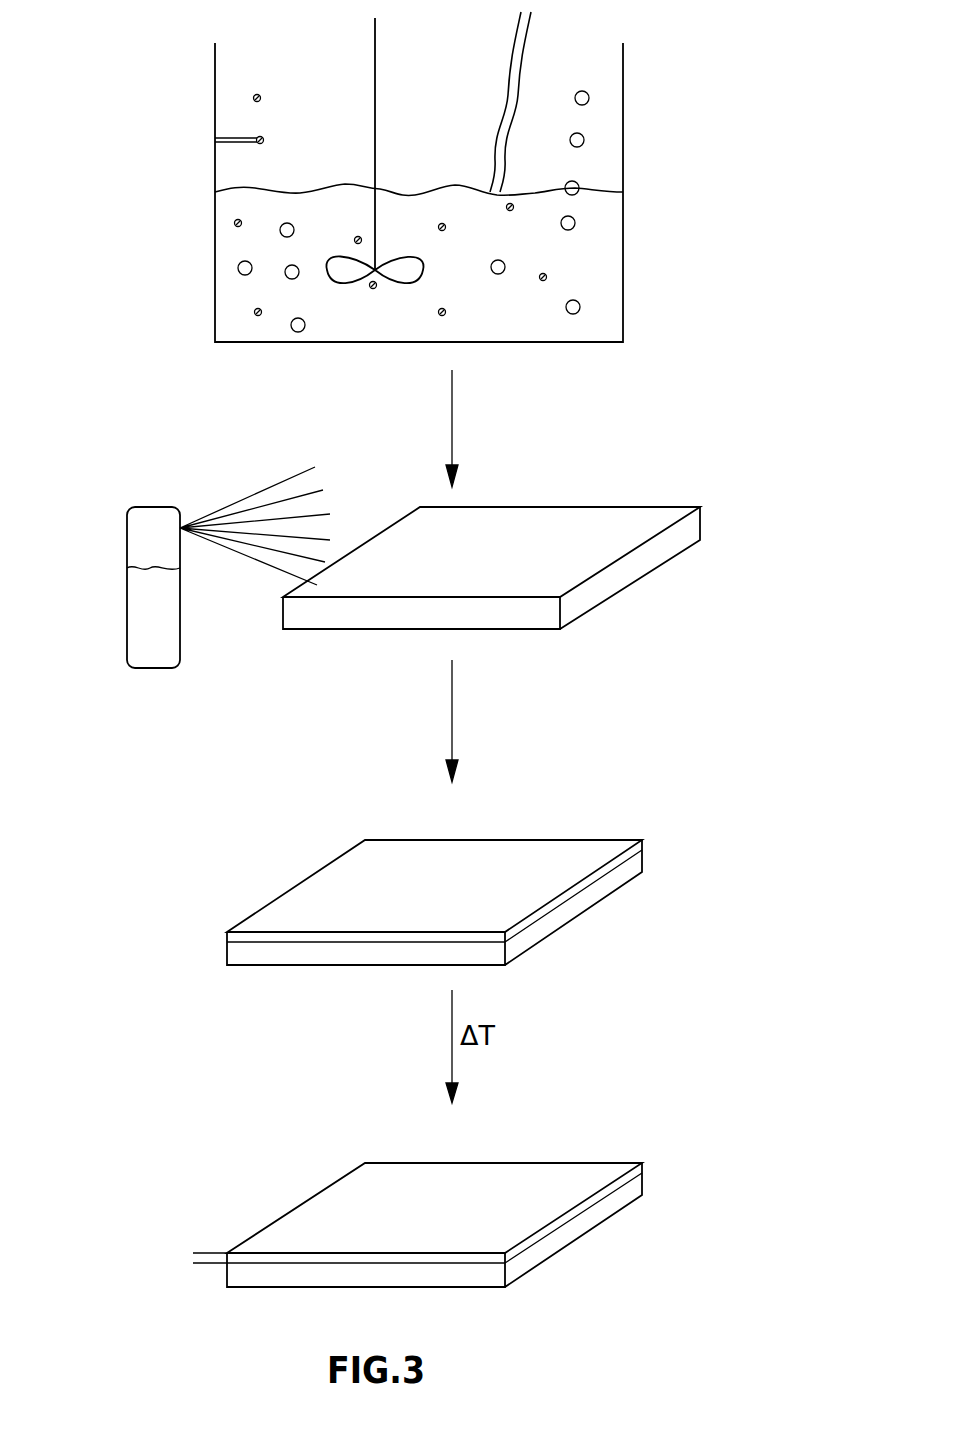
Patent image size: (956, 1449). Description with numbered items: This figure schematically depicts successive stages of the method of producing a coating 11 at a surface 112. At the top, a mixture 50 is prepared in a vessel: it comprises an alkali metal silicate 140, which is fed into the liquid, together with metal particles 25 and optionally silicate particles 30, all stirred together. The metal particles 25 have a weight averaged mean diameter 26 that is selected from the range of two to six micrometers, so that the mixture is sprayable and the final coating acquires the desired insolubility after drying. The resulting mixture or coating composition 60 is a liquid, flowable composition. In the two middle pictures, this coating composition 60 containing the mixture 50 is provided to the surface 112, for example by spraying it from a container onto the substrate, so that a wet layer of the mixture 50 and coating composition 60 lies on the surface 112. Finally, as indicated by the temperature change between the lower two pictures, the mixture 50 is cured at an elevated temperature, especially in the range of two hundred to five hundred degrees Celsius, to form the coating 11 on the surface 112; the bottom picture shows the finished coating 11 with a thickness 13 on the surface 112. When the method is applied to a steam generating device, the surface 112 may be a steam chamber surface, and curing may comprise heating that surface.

The coating 11 is at (395, 1183).
The coating thickness 13 is at (201, 1232).
The metal particles 25 is at (253, 98).
The weight averaged mean diameter 26 is at (208, 120).
The silicate particles 30 is at (590, 98).
The mixture 50 is at (228, 325).
The coating composition 60 is at (606, 293).
The surface 112 is at (570, 523).
The alkali metal silicate 140 is at (517, 57).